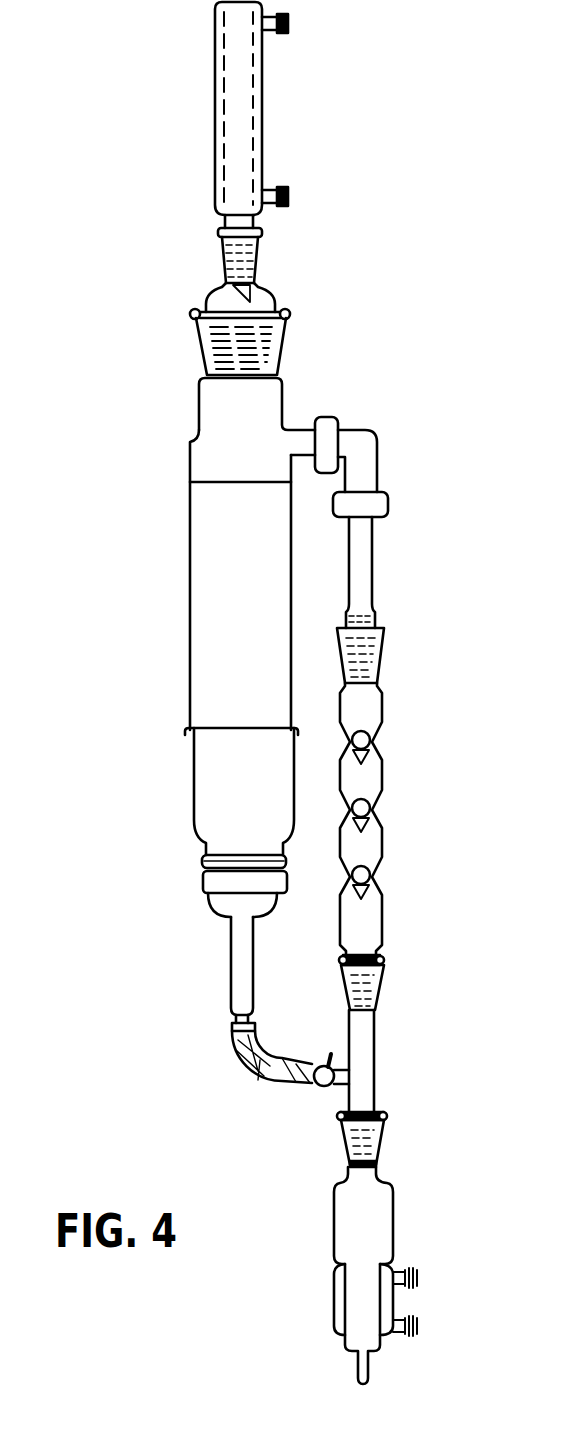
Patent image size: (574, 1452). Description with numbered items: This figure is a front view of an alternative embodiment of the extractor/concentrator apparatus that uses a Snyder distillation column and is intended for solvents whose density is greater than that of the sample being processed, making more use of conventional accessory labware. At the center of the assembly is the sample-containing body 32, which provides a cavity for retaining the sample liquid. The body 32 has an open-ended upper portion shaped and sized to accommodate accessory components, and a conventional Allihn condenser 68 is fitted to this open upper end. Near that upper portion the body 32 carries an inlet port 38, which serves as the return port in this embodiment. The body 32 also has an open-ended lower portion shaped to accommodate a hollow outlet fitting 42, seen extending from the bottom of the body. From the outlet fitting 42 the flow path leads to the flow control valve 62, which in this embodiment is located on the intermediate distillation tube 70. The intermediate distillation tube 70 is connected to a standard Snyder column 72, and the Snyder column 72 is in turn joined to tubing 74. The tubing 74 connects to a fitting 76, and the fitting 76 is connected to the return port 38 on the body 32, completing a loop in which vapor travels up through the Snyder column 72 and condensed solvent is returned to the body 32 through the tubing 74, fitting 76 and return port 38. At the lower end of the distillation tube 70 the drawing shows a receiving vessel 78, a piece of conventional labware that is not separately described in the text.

The Allihn condenser 68 is at (263, 118).
The inlet port 38 is at (293, 428).
The fitting 76 is at (378, 460).
The tubing 74 is at (373, 565).
The Snyder column 72 is at (383, 720).
The body 32 is at (190, 620).
The hollow outlet fitting 42 is at (213, 912).
The intermediate distillation tube 70 is at (378, 1040).
The flow control valve 62 is at (315, 1090).
The receiver flask 78 is at (395, 1222).